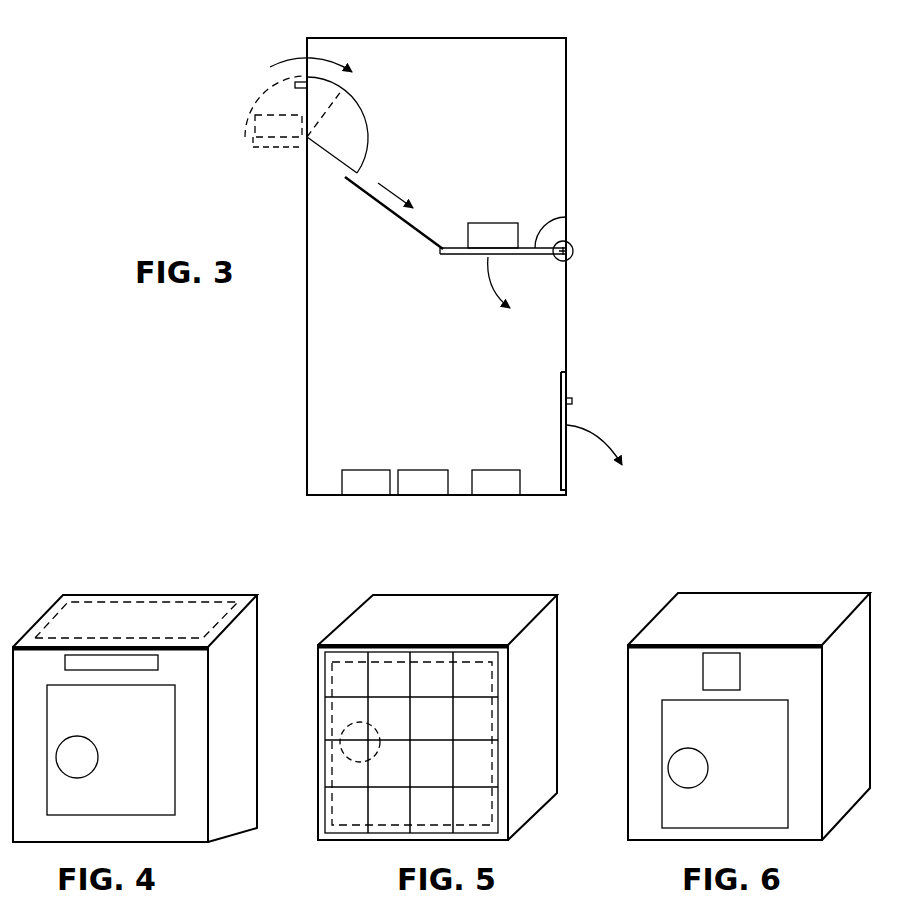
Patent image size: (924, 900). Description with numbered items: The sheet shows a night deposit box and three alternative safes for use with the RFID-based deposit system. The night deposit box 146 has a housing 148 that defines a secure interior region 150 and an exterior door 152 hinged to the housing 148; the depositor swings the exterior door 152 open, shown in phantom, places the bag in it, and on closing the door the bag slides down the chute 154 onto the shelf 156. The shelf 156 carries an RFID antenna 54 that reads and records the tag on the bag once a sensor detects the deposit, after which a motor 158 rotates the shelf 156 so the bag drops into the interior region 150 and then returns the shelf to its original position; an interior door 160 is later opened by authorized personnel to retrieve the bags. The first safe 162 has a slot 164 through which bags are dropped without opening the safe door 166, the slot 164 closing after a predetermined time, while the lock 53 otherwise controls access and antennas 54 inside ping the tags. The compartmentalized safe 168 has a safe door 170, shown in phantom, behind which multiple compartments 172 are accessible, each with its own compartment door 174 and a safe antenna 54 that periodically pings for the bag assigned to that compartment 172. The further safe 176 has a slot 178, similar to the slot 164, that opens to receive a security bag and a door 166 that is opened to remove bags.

In FIG. 3, the lock 53 is at (282, 130).
In FIG. 4, the lock 53 is at (91, 774).
In FIG. 5, the lock 53 is at (340, 730).
In FIG. 6, the lock 53 is at (708, 770).
In FIG. 3, the RFID antenna 54 is at (469, 287).
In FIG. 4, the RFID antenna 54 is at (133, 572).
In FIG. 3, the night deposit box 146 is at (594, 137).
In FIG. 3, the housing 148 is at (535, 38).
In FIG. 3, the secure interior region 150 is at (550, 293).
In FIG. 3, the exterior door 152 is at (257, 100).
In FIG. 3, the chute 154 is at (400, 223).
In FIG. 3, the shelf 156 is at (566, 213).
In FIG. 3, the motor 158 is at (574, 250).
In FIG. 3, the interior door 160 is at (572, 404).
In FIG. 4, the safe 162 is at (218, 550).
In FIG. 4, the slot 164 is at (160, 662).
In FIG. 4, the safe door 166 is at (158, 752).
In FIG. 6, the safe door 166 is at (771, 748).
In FIG. 5, the compartmentalized safe 168 is at (474, 590).
In FIG. 5, the safe door 170 is at (393, 667).
In FIG. 5, the compartment 172 is at (392, 668).
In FIG. 5, the compartment door 174 is at (378, 665).
In FIG. 6, the safe 176 is at (753, 586).
In FIG. 6, the slot 178 is at (742, 670).